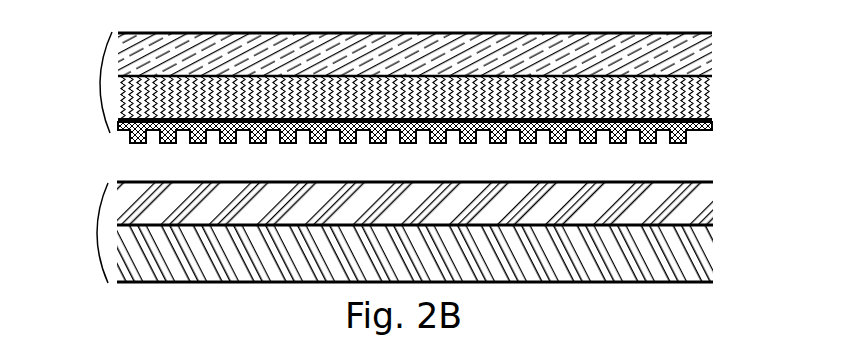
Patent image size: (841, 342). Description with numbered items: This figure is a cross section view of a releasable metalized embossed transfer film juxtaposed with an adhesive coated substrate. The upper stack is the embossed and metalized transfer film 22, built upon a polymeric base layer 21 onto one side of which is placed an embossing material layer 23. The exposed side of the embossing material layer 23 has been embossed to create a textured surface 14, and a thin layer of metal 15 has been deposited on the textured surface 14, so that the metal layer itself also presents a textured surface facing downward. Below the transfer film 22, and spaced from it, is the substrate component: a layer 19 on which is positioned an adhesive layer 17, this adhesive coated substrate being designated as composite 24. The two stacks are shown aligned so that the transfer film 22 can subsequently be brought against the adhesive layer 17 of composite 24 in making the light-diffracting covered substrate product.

The textured surface 14 is at (668, 143).
The layer of metal 15 is at (712, 132).
The adhesive layer 17 is at (687, 210).
The layer 19 is at (707, 263).
The polymeric base layer 21 is at (700, 67).
The embossed and metalized transfer film 22 is at (102, 83).
The embossing material layer 23 is at (707, 110).
The composite 24 is at (97, 228).